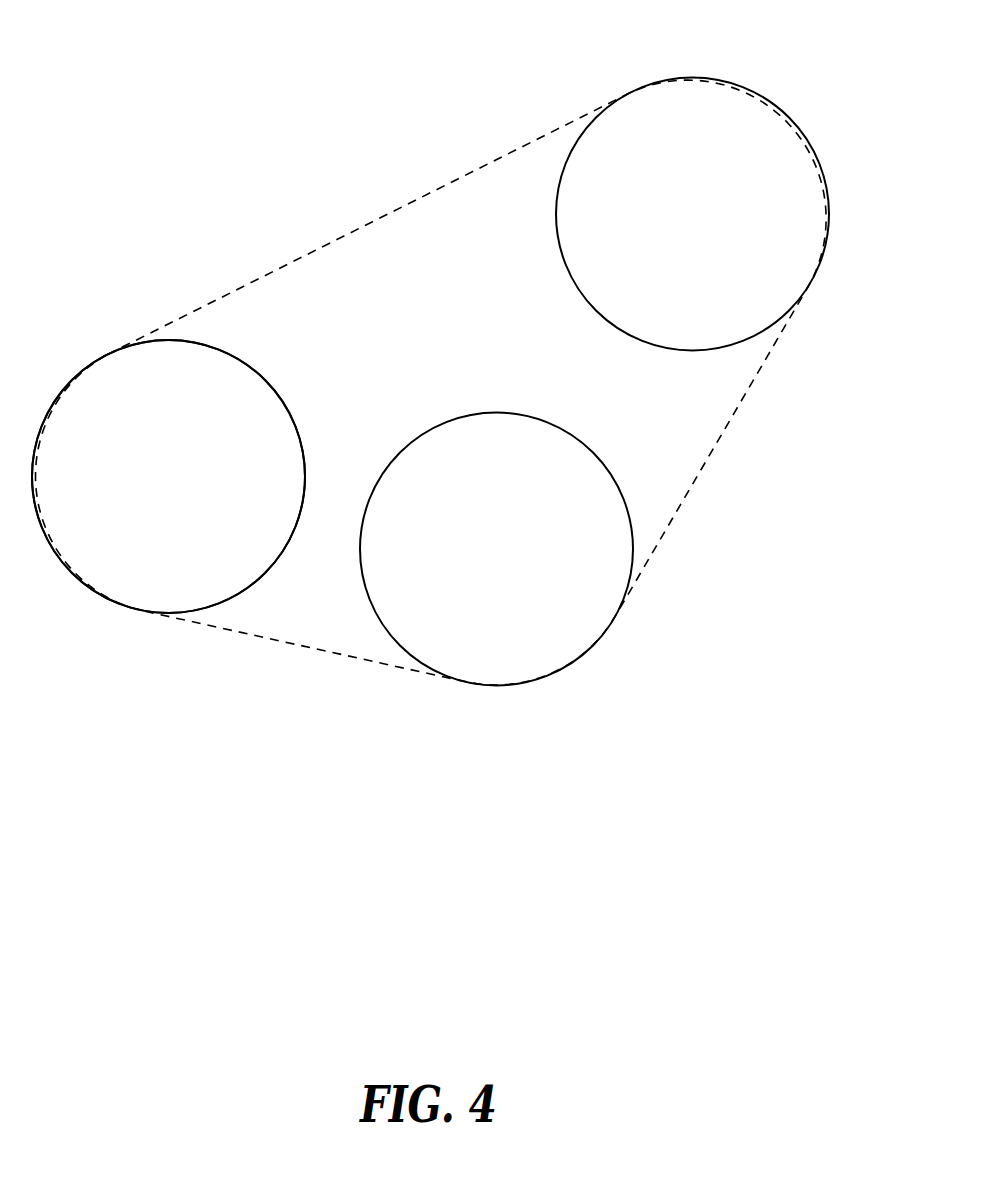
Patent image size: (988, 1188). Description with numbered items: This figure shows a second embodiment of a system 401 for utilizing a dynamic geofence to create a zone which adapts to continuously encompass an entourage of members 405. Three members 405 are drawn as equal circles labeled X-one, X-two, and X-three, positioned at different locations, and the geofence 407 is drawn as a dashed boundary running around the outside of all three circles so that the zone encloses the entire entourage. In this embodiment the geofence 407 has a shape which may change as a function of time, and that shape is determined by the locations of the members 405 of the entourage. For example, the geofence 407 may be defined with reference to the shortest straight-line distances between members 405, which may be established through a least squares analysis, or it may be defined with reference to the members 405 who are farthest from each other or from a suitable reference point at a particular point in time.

The system 401 is at (157, 102).
The members 405 is at (305, 457).
The geofence 407 is at (718, 443).